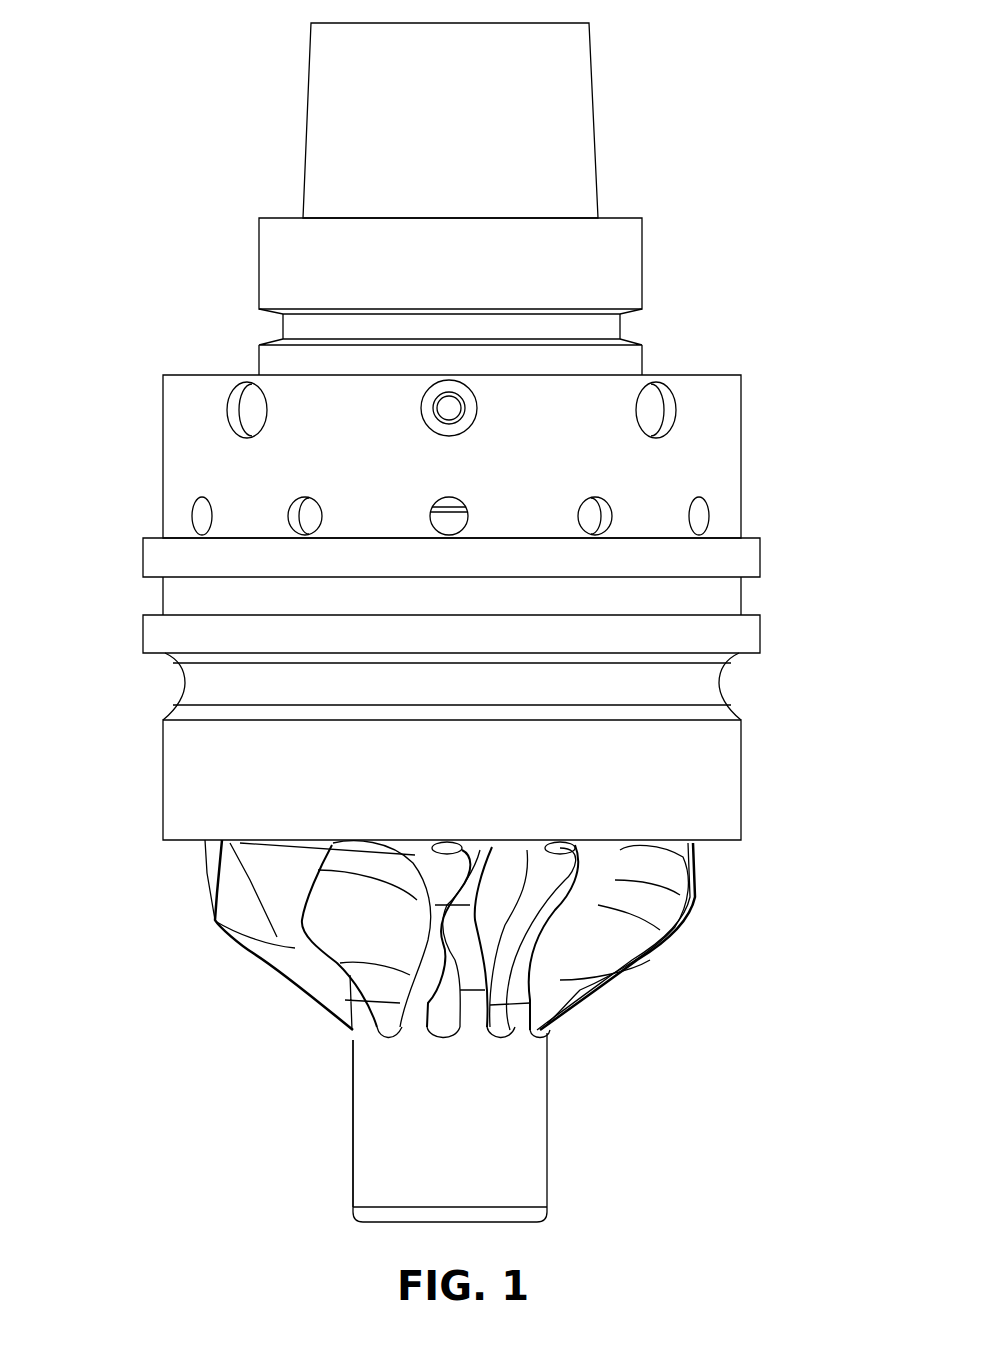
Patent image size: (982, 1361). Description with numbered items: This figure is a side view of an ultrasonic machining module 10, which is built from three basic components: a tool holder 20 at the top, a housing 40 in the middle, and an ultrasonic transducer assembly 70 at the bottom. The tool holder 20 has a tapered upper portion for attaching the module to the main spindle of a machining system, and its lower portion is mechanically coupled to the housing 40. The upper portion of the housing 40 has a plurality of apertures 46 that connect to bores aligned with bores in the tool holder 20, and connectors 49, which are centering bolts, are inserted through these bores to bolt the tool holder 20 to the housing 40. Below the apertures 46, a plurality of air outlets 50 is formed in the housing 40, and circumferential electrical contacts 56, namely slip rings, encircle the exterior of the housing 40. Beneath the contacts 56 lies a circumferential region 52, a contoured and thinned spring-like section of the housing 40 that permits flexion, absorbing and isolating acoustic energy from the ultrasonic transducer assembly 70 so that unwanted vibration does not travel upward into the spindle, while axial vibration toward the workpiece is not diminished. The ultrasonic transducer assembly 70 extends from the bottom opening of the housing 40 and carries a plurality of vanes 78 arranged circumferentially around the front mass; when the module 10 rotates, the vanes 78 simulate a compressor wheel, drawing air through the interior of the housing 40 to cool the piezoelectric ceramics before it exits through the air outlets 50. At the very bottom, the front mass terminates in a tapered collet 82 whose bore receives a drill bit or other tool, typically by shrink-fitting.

The ultrasonic machining module 10 is at (250, 74).
The tool holder 20 is at (598, 151).
The housing 40 is at (163, 461).
The apertures 46 is at (676, 400).
The connectors 49 is at (449, 428).
The air outlets 50 is at (710, 516).
The circumferential region 52 is at (186, 678).
The circumferential electrical contacts 56 is at (143, 552).
The ultrasonic transducer assembly 70 is at (548, 1125).
The vanes 78 is at (215, 923).
The tapered collet 82 is at (353, 1108).